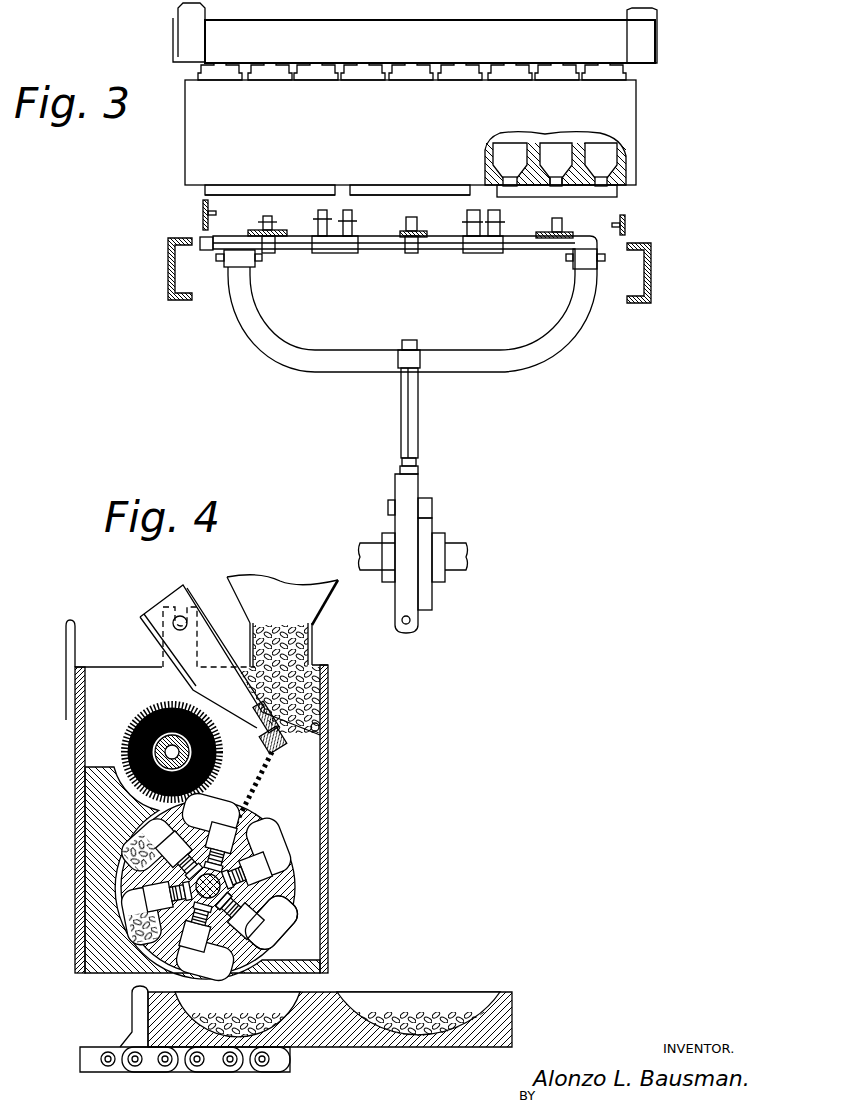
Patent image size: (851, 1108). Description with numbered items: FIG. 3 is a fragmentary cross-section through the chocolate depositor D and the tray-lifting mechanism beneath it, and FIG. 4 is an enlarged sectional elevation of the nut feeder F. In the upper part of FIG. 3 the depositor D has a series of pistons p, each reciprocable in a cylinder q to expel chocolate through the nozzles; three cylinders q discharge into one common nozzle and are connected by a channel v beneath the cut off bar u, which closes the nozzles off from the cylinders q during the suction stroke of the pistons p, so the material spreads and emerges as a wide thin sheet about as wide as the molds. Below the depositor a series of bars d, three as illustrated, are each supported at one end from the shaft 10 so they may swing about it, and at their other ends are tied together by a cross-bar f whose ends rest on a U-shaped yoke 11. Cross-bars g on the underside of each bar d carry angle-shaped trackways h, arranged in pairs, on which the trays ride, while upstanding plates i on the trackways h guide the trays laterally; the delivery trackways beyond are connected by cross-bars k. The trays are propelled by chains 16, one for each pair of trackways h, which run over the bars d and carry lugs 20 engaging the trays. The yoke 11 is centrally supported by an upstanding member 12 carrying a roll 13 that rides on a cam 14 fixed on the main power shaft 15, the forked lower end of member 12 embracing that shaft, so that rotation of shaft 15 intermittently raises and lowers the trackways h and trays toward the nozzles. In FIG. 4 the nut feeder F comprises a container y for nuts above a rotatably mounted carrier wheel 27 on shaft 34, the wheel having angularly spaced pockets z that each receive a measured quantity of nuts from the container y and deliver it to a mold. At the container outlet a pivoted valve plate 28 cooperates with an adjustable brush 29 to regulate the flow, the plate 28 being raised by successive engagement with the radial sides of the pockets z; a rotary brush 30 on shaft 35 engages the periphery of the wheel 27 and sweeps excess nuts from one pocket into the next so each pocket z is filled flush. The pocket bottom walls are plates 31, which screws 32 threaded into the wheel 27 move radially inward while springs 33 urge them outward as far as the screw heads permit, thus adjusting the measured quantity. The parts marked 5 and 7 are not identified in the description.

In FIG. 3, the shaft 10 is at (415, 33).
In FIG. 4, the shaft 10 is at (407, 1003).
In FIG. 3, the pistons p is at (265, 70).
In FIG. 3, the depositor D is at (425, 132).
In FIG. 3, the cylinder q is at (495, 156).
In FIG. 3, the lugs 20 is at (256, 198).
In FIG. 4, the lugs 20 is at (130, 1012).
In FIG. 3, the cross-bars k is at (355, 200).
In FIG. 3, the plate / conveyor chain 5 is at (283, 190).
In FIG. 4, the plate / conveyor chain 5 is at (222, 1062).
In FIG. 3, the channel v is at (518, 190).
In FIG. 3, the cut off bar u is at (544, 188).
In FIG. 3, the trackways h is at (202, 205).
In FIG. 3, the upstanding plates i is at (203, 218).
In FIG. 3, the cross-bar f is at (172, 302).
In FIG. 3, the U-shaped yoke 11 is at (294, 352).
In FIG. 3, the bars d is at (268, 254).
In FIG. 3, the cross-bars g is at (330, 256).
In FIG. 3, the chains 16 is at (413, 232).
In FIG. 3, the upstanding member 12 is at (411, 428).
In FIG. 3, the roll 13 is at (420, 500).
In FIG. 3, the cam 14 is at (427, 594).
In FIG. 3, the shaft 15 is at (458, 553).
In FIG. 4, the nut feeder F is at (329, 790).
In FIG. 4, the container y is at (315, 627).
In FIG. 4, the valve plate 28 is at (282, 770).
In FIG. 4, the adjustable brush 29 is at (268, 737).
In FIG. 4, the springs 33 is at (268, 835).
In FIG. 4, the rotary brush 30 is at (115, 745).
In FIG. 4, the shaft 35 is at (160, 760).
In FIG. 4, the carrier wheel 27 is at (283, 957).
In FIG. 4, the screws 32 is at (272, 868).
In FIG. 4, the pockets z is at (290, 862).
In FIG. 4, the plates 31 is at (280, 878).
In FIG. 4, the shaft 34 is at (205, 882).
In FIG. 4, the mold tray 7 is at (323, 1032).